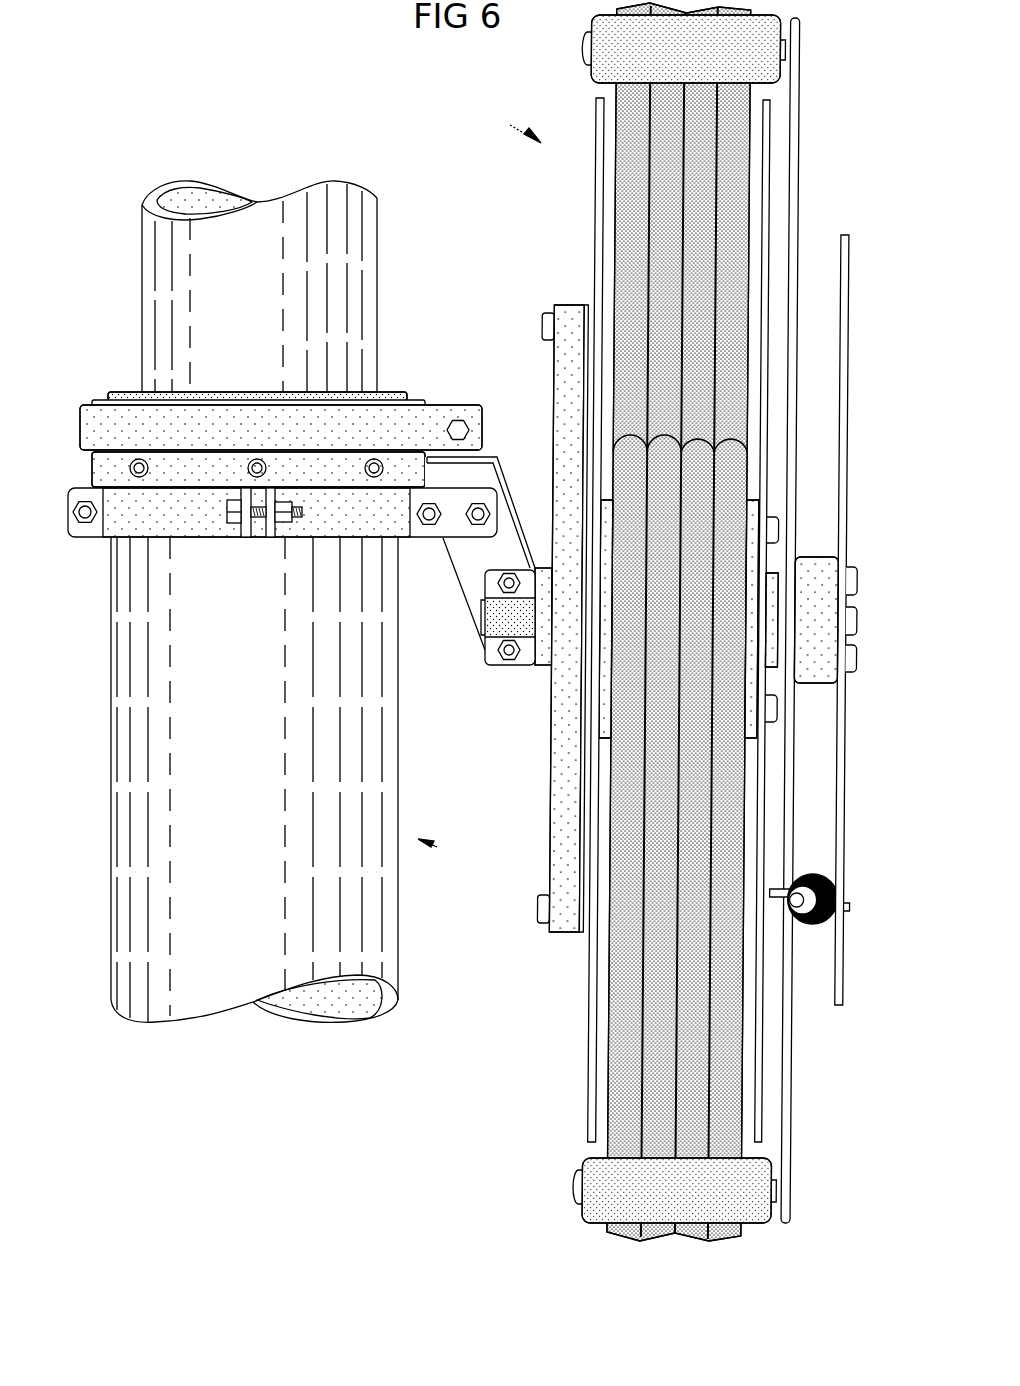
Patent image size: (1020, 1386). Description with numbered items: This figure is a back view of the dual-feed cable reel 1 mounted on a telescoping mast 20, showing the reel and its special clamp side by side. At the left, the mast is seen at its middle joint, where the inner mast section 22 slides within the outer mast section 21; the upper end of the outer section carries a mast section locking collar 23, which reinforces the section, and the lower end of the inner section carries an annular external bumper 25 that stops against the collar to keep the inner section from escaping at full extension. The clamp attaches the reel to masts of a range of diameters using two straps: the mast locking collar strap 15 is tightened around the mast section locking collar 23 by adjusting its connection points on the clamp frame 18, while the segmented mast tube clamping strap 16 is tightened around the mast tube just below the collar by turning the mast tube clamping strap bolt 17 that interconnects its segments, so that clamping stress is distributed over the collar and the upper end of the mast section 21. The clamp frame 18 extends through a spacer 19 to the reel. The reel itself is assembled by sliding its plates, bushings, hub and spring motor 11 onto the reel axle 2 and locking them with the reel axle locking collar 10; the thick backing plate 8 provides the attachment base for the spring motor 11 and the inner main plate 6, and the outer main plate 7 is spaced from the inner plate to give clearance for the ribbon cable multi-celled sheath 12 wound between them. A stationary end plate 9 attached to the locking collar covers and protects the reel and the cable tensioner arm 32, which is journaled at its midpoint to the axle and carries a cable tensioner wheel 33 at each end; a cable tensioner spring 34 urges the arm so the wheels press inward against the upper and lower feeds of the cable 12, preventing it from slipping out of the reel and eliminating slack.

The dual-feed cable reel 1 is at (514, 124).
The reel axle 2 is at (858, 621).
The inner main plate of reel 6 is at (593, 210).
The outer main plate of reel 7 is at (770, 160).
The backing plate 8 is at (592, 303).
The end plate 9 is at (848, 405).
The reel axle locking collar 10 is at (808, 572).
The spring motor 11 is at (566, 415).
The ribbon cable multi-celled sheath 12 is at (622, 1013).
The mast locking collar strap 15 is at (432, 410).
The mast tube clamping strap 16 is at (92, 538).
The mast tube clamping strap bolt 17 is at (70, 513).
The clamp frame 18 is at (505, 486).
The spacer 19 is at (545, 645).
The telescoping mast 20 is at (449, 852).
The outer mast section at middle joint of mast 21 is at (400, 923).
The inner mast section at middle joint of mast 22 is at (379, 288).
The mast section locking collar 23 is at (99, 400).
The mast section external bumper 25 is at (120, 393).
The cable tensioner arm 32 is at (798, 100).
The cable tensioner wheel 33 is at (590, 77).
The cable tensioner spring 34 is at (820, 880).